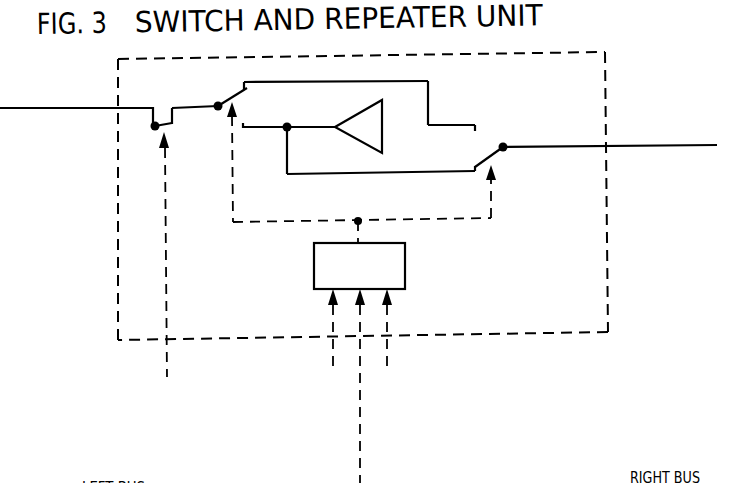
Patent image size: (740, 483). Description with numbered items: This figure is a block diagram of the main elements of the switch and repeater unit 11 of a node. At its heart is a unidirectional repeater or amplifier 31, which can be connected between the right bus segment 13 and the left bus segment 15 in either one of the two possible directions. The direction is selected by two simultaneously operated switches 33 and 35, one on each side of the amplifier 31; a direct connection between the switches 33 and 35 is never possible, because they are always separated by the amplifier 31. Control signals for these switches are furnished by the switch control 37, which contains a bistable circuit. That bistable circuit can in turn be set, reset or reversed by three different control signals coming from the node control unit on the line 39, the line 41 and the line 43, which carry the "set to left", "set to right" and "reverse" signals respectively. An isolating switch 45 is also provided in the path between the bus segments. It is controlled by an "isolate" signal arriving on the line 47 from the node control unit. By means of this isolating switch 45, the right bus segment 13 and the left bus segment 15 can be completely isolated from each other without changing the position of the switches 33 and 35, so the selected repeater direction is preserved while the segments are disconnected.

The switch and repeater unit 11 is at (608, 278).
The right bus segment 13 is at (683, 145).
The left bus segment 15 is at (35, 107).
The unidirectional repeater or amplifier 31 is at (364, 103).
The switch 33 is at (236, 80).
The switch 35 is at (497, 152).
The switch control 37 is at (405, 262).
The line 39 is at (333, 322).
The line 41 is at (388, 322).
The line 43 is at (361, 457).
The isolating switch 45 is at (170, 125).
The line 47 is at (166, 278).